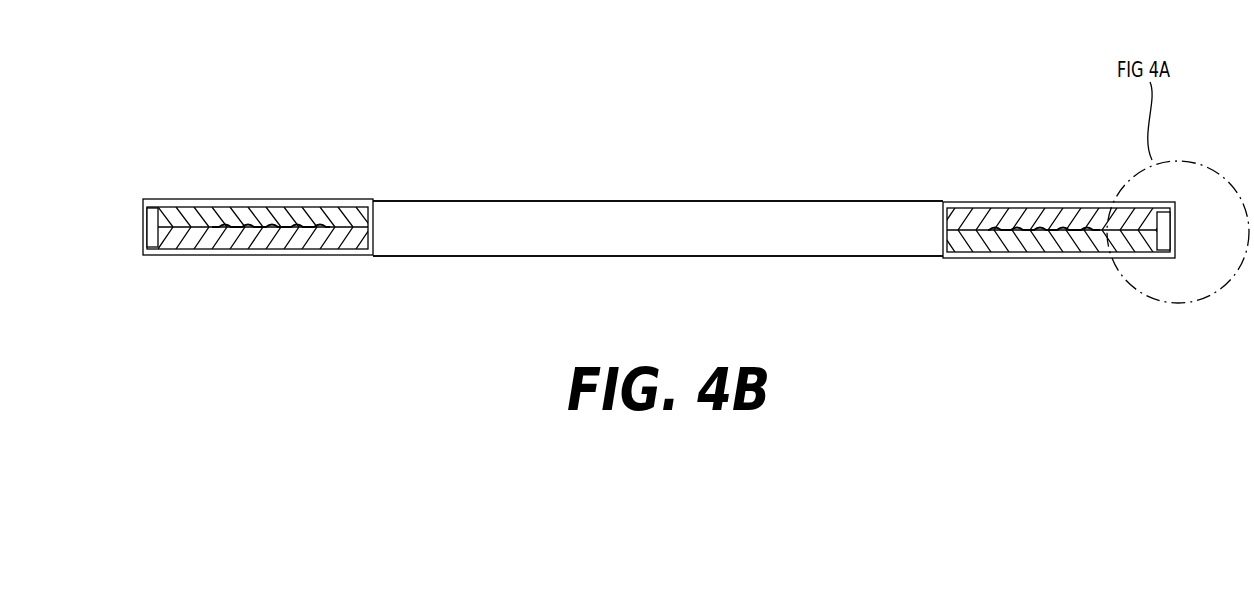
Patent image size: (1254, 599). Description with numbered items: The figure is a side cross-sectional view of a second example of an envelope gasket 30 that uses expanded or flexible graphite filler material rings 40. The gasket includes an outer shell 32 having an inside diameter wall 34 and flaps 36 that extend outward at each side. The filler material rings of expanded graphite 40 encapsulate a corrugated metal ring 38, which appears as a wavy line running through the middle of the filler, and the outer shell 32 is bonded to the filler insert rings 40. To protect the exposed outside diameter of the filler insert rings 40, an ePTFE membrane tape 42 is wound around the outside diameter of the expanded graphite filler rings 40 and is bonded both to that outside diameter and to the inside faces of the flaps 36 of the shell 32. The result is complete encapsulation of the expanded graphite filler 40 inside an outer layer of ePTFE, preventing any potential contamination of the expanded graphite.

The gasket 30 is at (772, 201).
The outer shell 32 is at (403, 210).
The inside diameter wall 34 is at (375, 227).
The flaps 36 is at (173, 199).
The corrugated metal ring 38 is at (250, 226).
The filler material rings 40 is at (297, 211).
The ePTFE membrane tape 42 is at (143, 226).